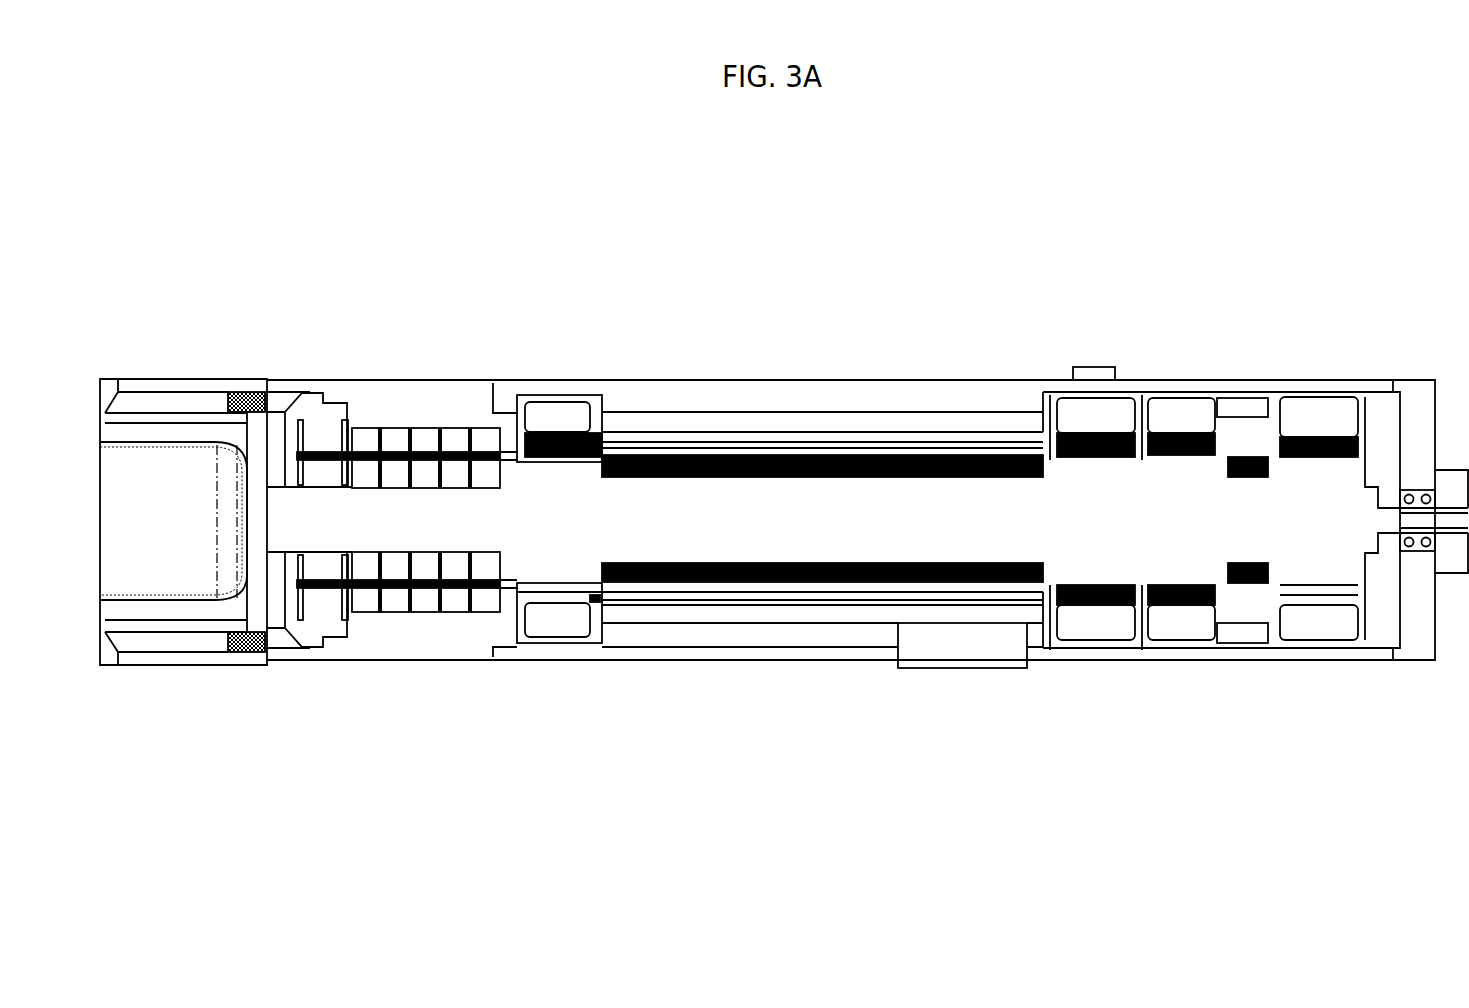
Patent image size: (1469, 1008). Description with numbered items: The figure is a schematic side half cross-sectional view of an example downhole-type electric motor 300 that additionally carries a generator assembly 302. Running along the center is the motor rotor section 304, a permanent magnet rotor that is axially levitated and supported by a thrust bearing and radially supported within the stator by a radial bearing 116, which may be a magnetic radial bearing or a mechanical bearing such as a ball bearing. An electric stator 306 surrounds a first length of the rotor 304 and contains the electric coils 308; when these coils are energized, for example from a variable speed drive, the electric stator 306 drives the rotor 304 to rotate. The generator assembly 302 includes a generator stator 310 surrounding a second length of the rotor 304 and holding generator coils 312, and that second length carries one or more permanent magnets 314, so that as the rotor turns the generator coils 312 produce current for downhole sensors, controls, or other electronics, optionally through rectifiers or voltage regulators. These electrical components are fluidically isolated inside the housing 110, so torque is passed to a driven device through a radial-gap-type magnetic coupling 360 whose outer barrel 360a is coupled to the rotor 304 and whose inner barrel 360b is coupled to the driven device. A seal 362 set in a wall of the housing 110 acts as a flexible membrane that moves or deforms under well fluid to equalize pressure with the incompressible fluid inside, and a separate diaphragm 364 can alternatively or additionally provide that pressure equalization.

The electric motor 300 is at (837, 240).
The housing 110 is at (722, 378).
The generator assembly 302 is at (1253, 332).
The motor rotor section 304 is at (848, 541).
The electric stator 306 is at (650, 659).
The electric coils 308 is at (863, 610).
The generator stator 310 is at (1257, 670).
The generator coils 312 is at (1325, 628).
The permanent magnet 314 is at (1240, 583).
The magnetic coupling 360 is at (187, 357).
The outer barrel 360a is at (221, 394).
The inner barrel 360b is at (250, 585).
The seal 362 is at (1095, 367).
The diaphragm 364 is at (962, 668).
The radial bearing 116 is at (402, 393).